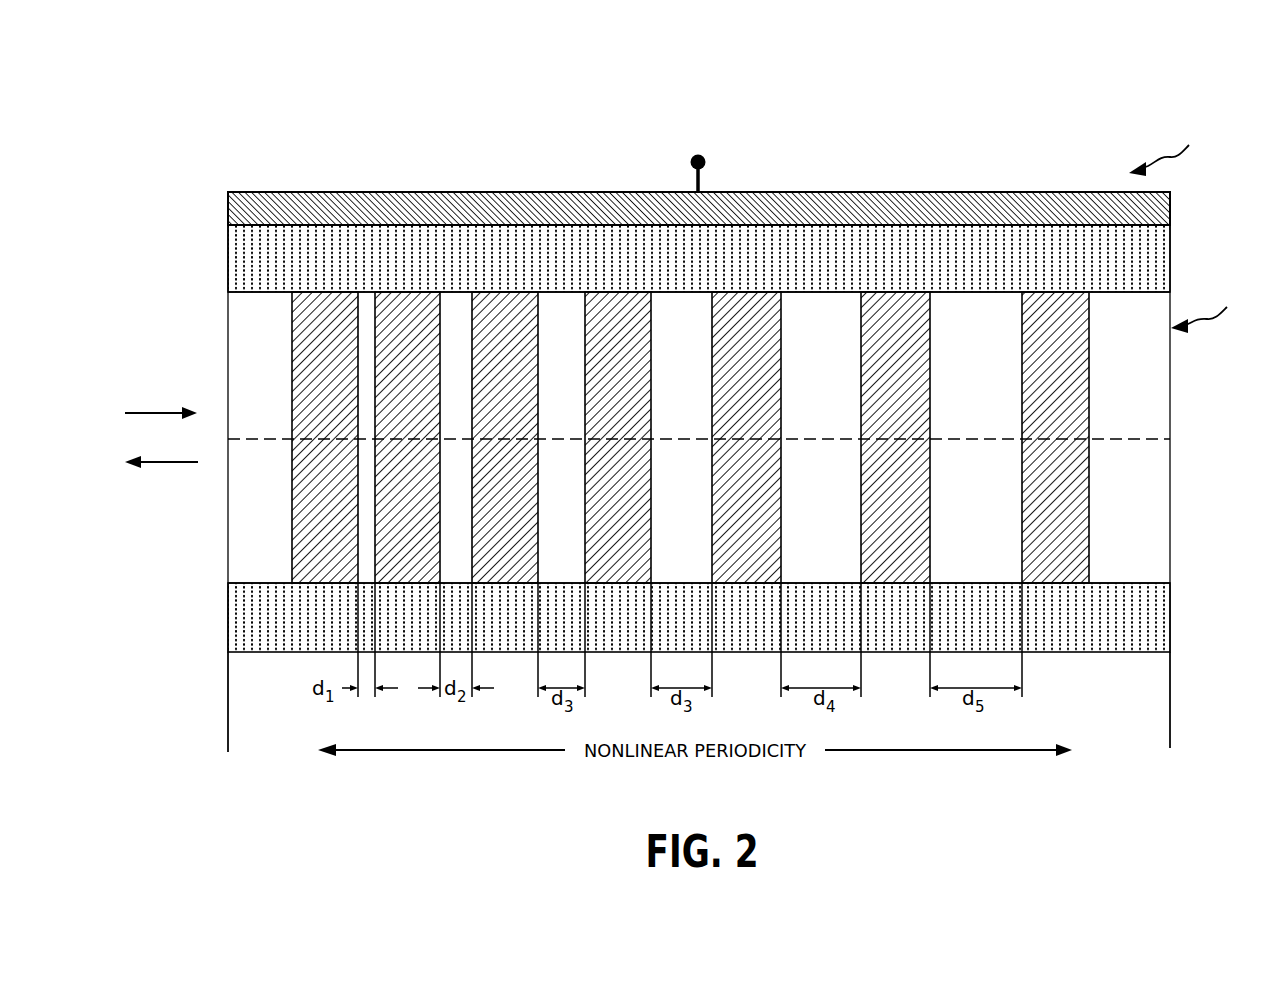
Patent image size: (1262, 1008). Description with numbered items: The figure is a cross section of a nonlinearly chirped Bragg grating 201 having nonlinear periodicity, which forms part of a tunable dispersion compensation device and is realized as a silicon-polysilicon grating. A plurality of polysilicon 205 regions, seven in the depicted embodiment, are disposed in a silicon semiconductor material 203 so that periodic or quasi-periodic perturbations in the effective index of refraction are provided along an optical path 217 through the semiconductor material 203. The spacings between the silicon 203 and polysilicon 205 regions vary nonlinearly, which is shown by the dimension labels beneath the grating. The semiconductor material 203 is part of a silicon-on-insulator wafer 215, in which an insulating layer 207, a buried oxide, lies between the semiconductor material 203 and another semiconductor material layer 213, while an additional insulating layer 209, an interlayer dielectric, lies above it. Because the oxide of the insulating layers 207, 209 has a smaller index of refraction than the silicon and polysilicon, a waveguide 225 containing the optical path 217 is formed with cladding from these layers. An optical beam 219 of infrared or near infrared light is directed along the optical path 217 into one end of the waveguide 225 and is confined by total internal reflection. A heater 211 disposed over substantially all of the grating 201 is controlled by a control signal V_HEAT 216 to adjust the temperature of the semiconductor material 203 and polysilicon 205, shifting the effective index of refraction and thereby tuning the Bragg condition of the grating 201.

The nonlinearly chirped Bragg grating 201 is at (1161, 73).
The semiconductor material 203 is at (366, 312).
The polysilicon regions 205 is at (333, 292).
The insulating layer 207 is at (1162, 600).
The insulating layer 209 is at (1162, 248).
The heater 211 is at (1170, 200).
The semiconductor material layer 213 is at (1170, 700).
The silicon-on-insulator wafer 215 is at (1168, 148).
The control signal V_HEAT 216 is at (705, 111).
The optical path 217 is at (1146, 439).
The optical beam 219 is at (152, 412).
The waveguide 225 is at (1211, 303).